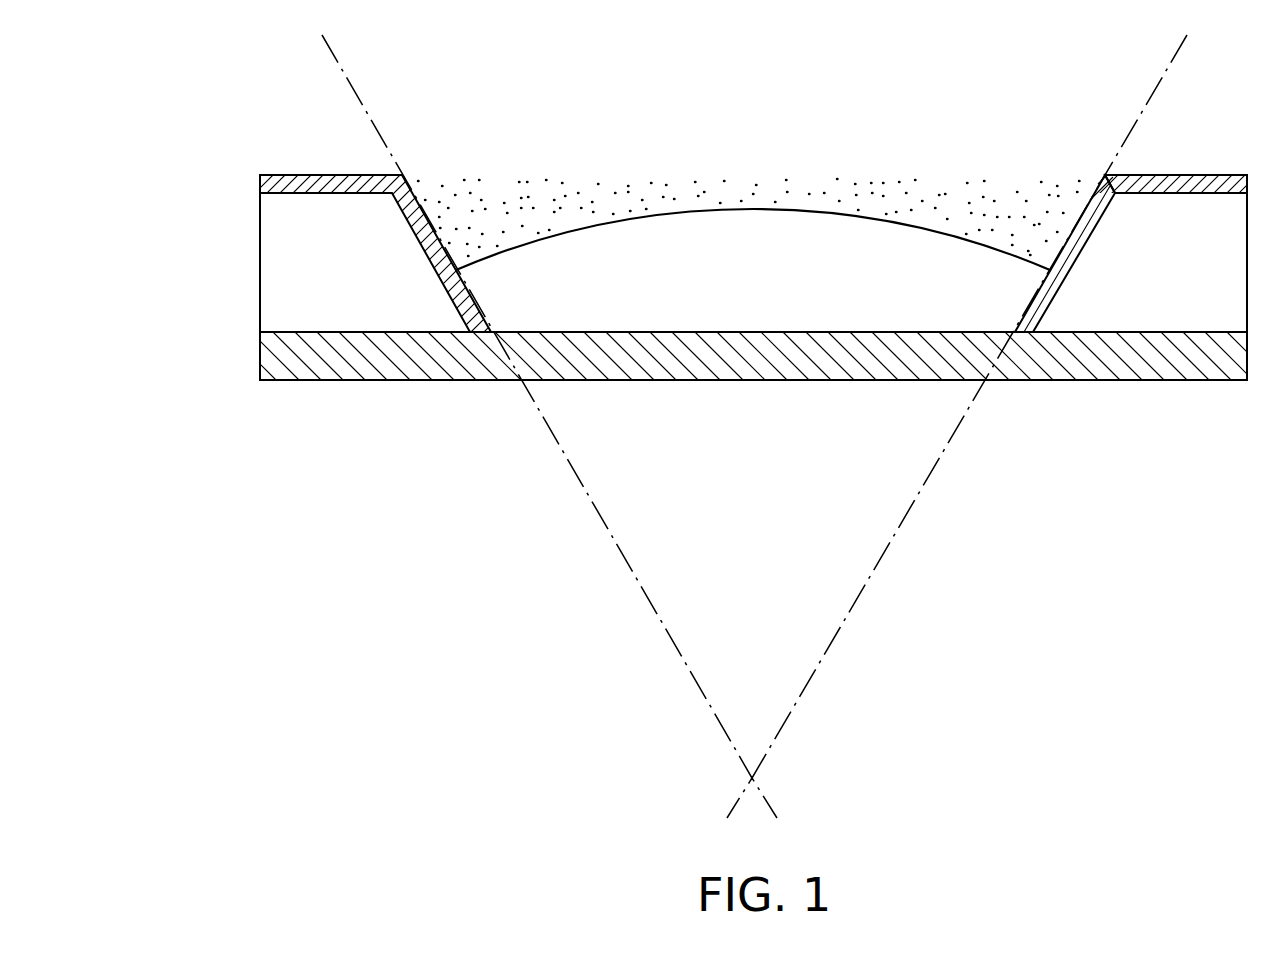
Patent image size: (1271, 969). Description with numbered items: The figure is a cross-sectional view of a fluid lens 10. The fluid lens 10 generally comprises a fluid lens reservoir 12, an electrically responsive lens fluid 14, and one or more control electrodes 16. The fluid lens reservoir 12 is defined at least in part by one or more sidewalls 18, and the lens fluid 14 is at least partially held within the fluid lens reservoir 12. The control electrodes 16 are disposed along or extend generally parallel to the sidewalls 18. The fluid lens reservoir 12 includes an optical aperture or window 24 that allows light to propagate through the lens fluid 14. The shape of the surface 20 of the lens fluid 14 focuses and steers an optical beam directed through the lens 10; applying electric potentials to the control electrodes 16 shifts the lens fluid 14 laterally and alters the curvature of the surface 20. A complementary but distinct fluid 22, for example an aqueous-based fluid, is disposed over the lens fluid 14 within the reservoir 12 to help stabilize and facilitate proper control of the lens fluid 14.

The fluid lens 10 is at (143, 144).
The fluid lens reservoir 12 is at (1086, 130).
The electrically responsive lens fluid 14 is at (690, 299).
The control electrodes 16 is at (1088, 210).
The sidewalls 18 is at (1082, 255).
The surface of the lens fluid 20 is at (664, 211).
The complementary fluid 22 is at (990, 225).
The optical aperture or window 24 is at (745, 375).